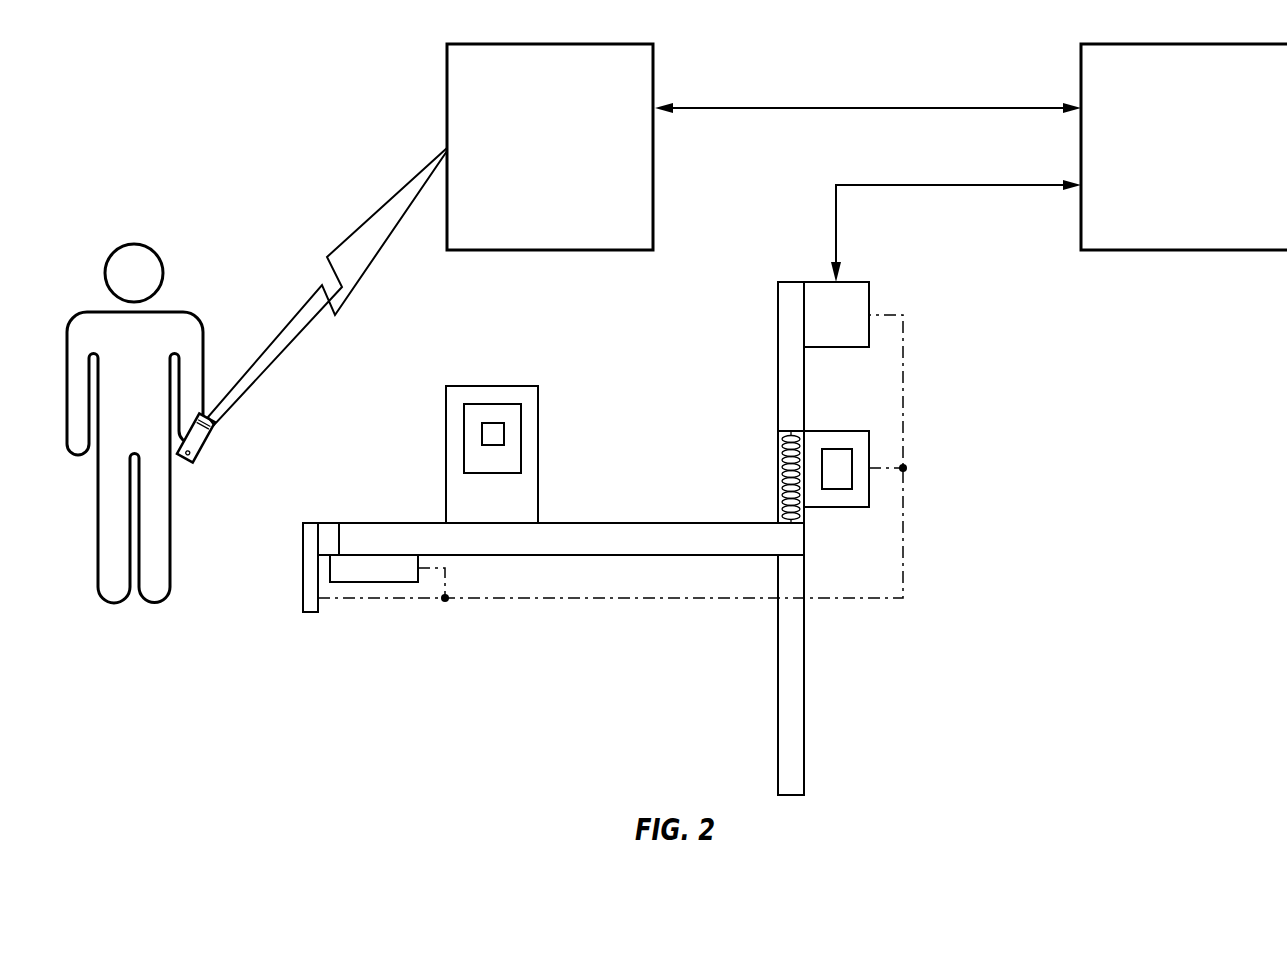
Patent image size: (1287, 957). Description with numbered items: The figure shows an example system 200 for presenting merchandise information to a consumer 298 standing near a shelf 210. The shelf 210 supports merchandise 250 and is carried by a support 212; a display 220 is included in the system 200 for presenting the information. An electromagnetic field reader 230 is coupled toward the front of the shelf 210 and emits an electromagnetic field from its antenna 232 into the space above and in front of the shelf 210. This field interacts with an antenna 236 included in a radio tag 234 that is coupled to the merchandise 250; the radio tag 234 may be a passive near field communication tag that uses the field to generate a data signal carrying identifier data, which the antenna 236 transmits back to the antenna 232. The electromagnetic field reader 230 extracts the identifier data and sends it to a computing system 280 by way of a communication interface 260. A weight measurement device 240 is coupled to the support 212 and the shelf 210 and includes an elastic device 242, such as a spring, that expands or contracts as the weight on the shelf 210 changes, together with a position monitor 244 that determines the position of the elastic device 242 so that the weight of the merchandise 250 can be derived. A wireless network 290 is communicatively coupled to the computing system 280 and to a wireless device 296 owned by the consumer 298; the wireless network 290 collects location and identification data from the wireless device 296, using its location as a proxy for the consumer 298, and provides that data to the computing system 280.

The system 200 is at (233, 84).
The shelf 210 is at (555, 523).
The support 212 is at (804, 649).
The display 220 is at (303, 606).
The electromagnetic field reader 230 is at (390, 583).
The antenna 232 is at (333, 523).
The radio tag 234 is at (521, 465).
The antenna 236 is at (504, 434).
The weight measurement device 240 is at (869, 492).
The elastic device 242 is at (781, 452).
The position monitor 244 is at (852, 457).
The merchandise 250 is at (538, 392).
The communication interface 260 is at (869, 294).
The computing system 280 is at (1167, 169).
The wireless network 290 is at (533, 169).
The wireless device 296 is at (207, 450).
The consumer 298 is at (197, 326).